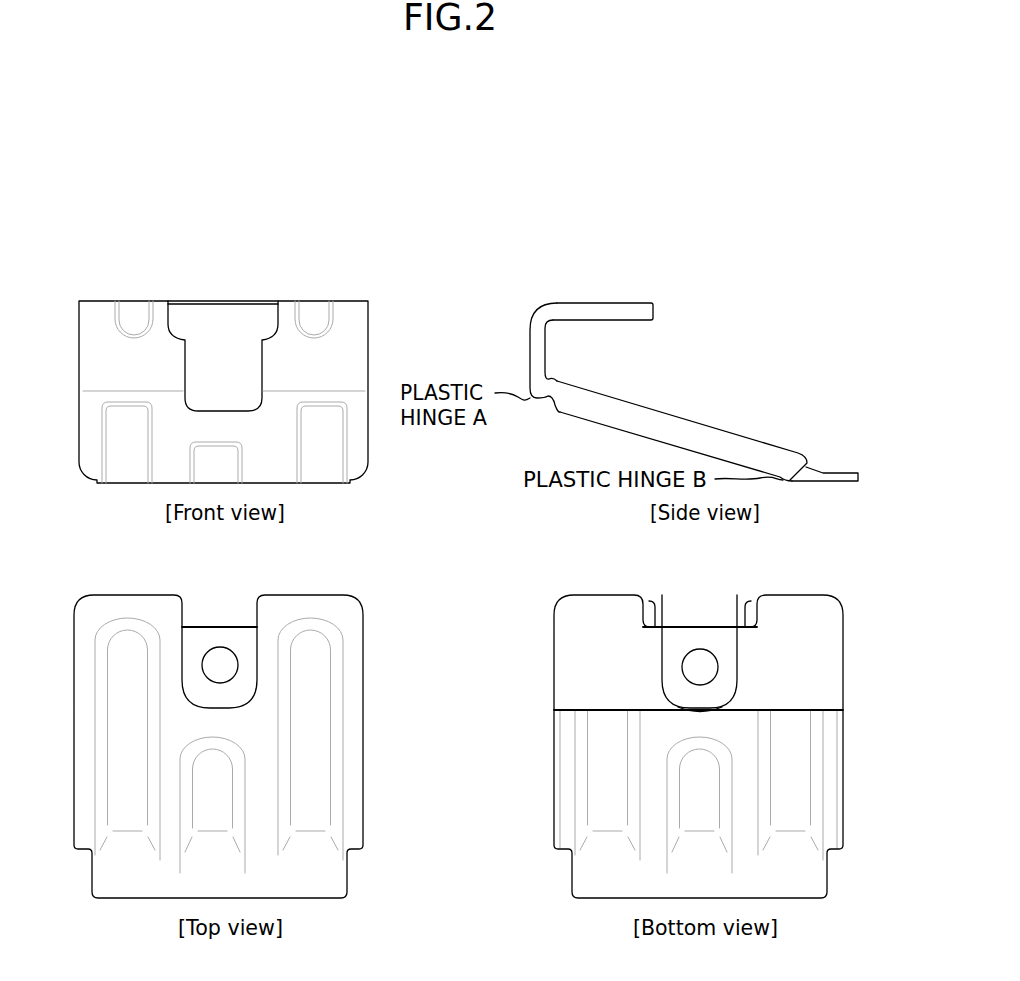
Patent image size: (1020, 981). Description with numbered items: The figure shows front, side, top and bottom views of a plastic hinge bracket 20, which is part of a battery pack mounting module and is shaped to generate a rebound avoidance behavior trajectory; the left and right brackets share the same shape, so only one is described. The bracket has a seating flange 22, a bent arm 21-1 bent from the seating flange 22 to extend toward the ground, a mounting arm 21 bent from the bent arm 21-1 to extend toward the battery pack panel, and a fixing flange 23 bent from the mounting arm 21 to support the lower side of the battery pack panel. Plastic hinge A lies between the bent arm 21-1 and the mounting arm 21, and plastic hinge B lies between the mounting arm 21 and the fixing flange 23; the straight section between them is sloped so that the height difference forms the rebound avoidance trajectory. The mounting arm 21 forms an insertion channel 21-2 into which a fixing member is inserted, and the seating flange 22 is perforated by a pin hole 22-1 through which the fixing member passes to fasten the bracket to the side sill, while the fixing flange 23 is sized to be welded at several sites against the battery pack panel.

The plastic hinge bracket 20 is at (421, 222).
The mounting arm 21 is at (113, 418).
The bent arm 21-1 is at (538, 352).
The insertion channel 21-2 is at (223, 357).
The seating flange 22 is at (643, 310).
The pin hole 22-1 is at (693, 667).
The fixing flange 23 is at (830, 477).